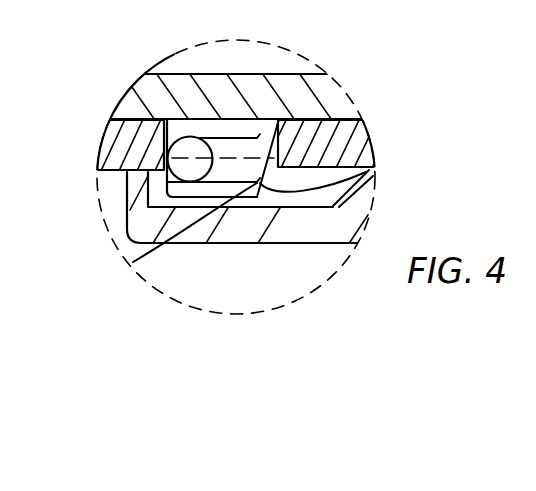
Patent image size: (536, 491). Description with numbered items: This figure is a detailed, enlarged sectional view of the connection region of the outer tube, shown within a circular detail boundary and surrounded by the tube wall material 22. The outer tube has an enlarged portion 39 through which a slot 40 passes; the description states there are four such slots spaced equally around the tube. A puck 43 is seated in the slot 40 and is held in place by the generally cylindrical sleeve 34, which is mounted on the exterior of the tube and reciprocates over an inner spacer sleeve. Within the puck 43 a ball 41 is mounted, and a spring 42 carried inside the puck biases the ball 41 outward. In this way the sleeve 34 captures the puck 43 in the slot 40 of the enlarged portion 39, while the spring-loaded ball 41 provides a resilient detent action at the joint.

The housing 22 is at (322, 72).
The sleeve 34 is at (280, 241).
The enlarged portion 39 is at (360, 153).
The slot 40 is at (278, 134).
The ball 41 is at (173, 143).
The spring 42 is at (133, 262).
The puck 43 is at (368, 176).